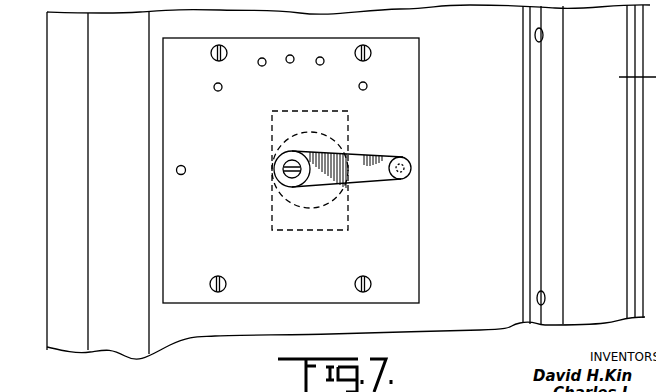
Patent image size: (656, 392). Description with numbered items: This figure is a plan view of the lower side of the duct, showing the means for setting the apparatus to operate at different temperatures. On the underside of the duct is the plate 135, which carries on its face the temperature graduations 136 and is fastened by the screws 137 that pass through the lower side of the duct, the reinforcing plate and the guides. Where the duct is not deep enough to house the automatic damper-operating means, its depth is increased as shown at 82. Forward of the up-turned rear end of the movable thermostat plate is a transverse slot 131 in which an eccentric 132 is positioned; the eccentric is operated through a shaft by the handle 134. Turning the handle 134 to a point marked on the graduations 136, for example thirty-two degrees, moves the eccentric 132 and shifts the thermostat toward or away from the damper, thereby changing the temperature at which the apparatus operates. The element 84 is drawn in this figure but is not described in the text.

The increased depth portion of duct 82 is at (124, 346).
The rivet 84 is at (544, 35).
The transverse slot 131 is at (348, 128).
The eccentric 132 is at (325, 130).
The handle 134 is at (400, 180).
The plate 135 is at (407, 241).
The temperature graduations 136 is at (185, 166).
The screws 137 is at (232, 29).